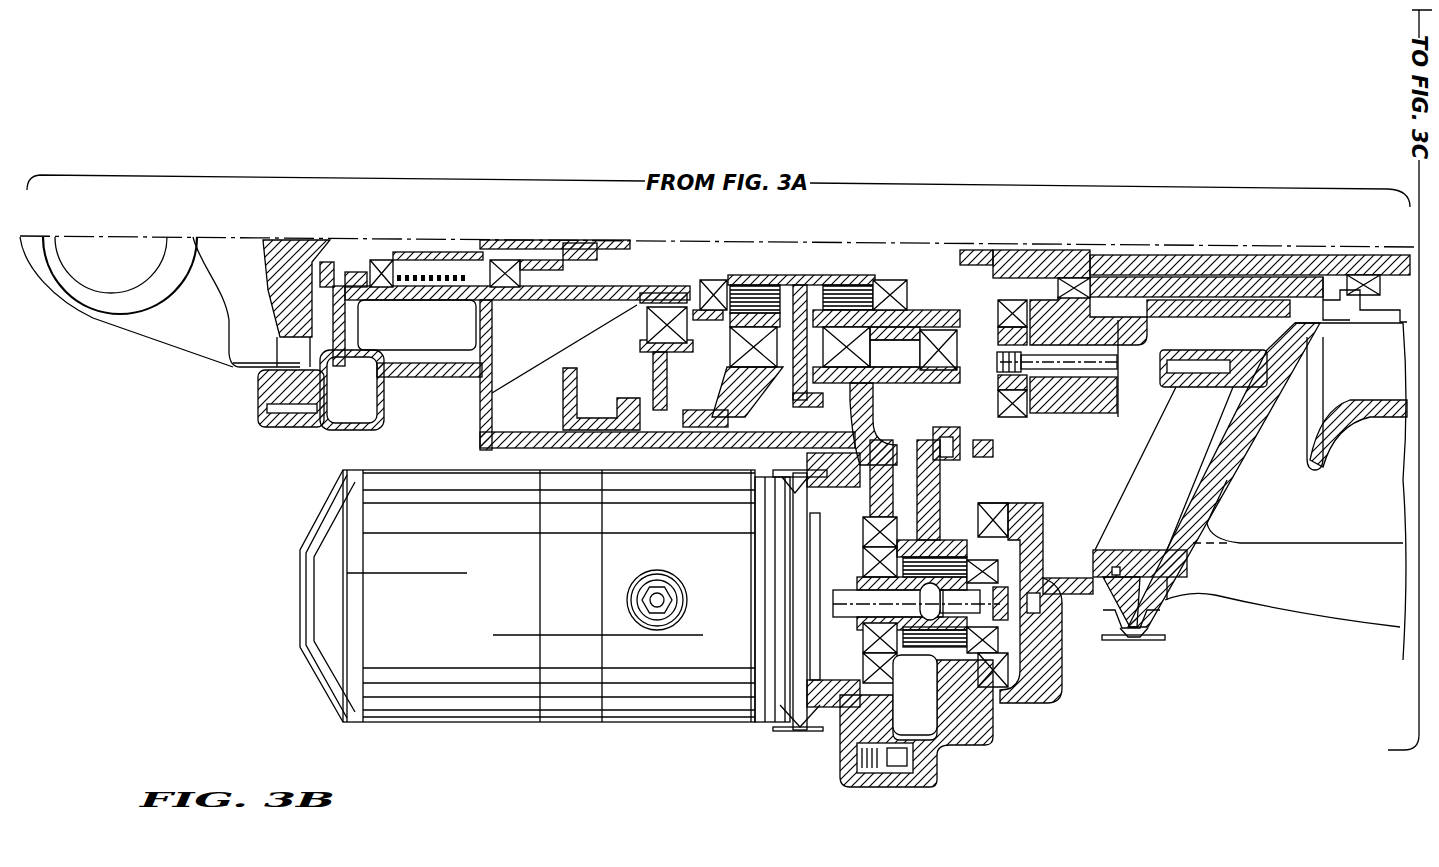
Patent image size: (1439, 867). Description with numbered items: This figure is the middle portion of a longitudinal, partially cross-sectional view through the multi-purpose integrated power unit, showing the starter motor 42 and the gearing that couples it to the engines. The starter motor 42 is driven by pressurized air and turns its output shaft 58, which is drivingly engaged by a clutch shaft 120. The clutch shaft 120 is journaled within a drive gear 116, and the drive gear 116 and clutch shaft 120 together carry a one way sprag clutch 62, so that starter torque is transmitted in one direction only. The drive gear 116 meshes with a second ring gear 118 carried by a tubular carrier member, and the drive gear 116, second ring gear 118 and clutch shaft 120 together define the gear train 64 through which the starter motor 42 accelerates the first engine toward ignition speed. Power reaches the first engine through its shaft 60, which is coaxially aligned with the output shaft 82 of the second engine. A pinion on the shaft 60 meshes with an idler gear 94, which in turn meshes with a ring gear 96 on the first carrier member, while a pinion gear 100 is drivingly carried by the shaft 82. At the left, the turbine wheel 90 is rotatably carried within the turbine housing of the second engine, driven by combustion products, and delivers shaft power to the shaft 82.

The starter motor 42 is at (469, 708).
The output shaft 58 is at (843, 603).
The shaft 60 is at (1153, 315).
The one way sprag clutch 62 is at (958, 630).
The gear train 64 is at (959, 491).
The output shaft 82 is at (459, 300).
The turbine wheel 90 is at (268, 282).
The idler gear 94 is at (997, 306).
The ring gear 96 is at (995, 447).
The pinion gear 100 is at (540, 272).
The drive gear 116 is at (965, 748).
The second ring gear 118 is at (922, 441).
The clutch shaft 120 is at (1049, 668).